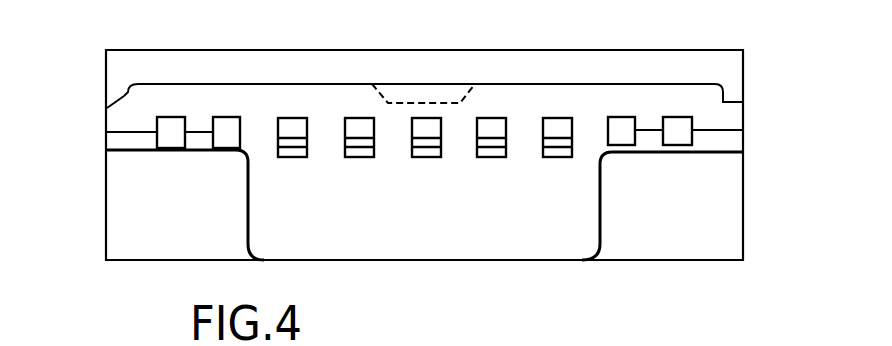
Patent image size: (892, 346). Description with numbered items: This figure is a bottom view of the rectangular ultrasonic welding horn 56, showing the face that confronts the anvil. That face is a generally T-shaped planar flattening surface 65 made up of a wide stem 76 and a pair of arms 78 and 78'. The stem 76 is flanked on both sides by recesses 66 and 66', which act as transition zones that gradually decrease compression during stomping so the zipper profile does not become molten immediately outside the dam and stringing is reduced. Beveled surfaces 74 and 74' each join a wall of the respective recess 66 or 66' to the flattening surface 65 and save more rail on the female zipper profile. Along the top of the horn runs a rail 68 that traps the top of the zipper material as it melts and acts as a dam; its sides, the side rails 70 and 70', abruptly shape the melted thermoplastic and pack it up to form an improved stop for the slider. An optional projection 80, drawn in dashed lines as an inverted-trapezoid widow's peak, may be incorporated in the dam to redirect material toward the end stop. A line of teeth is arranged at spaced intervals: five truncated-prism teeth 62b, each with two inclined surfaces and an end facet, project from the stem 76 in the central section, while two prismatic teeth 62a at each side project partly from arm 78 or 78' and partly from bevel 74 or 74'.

The horn 56 is at (743, 248).
The teeth 62a is at (234, 117).
The teeth 62b is at (352, 157).
The flattening surface 65 is at (625, 84).
The recess 66 is at (703, 206).
The recess 66' is at (150, 205).
The rail 68 is at (567, 84).
The side rail 70 is at (761, 108).
The side rail 70' is at (83, 91).
The beveled surface 74 is at (708, 147).
The beveled surface 74' is at (139, 149).
The stem 76 is at (535, 228).
The arm 78 is at (749, 77).
The arm 78' is at (89, 109).
The projection 80 is at (415, 95).